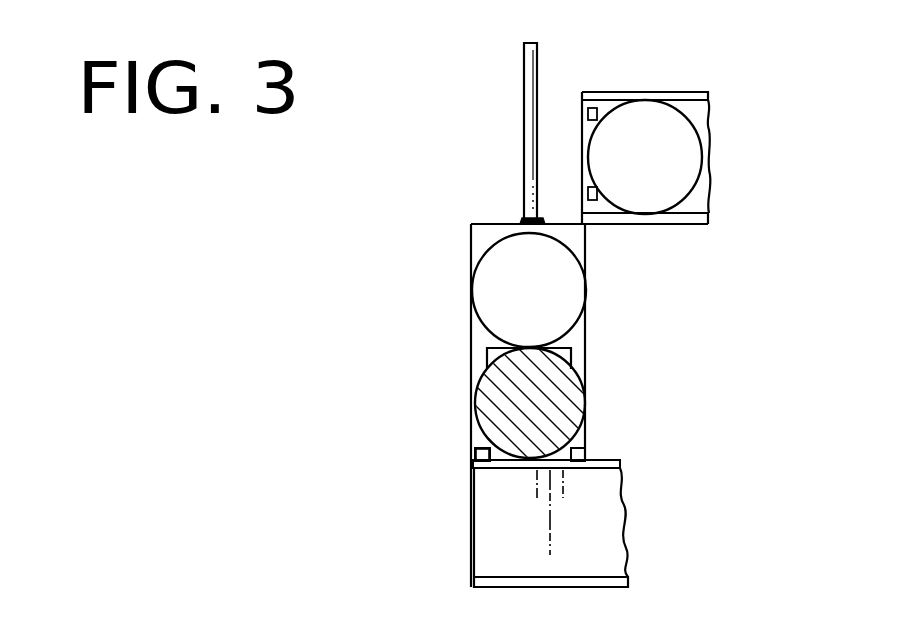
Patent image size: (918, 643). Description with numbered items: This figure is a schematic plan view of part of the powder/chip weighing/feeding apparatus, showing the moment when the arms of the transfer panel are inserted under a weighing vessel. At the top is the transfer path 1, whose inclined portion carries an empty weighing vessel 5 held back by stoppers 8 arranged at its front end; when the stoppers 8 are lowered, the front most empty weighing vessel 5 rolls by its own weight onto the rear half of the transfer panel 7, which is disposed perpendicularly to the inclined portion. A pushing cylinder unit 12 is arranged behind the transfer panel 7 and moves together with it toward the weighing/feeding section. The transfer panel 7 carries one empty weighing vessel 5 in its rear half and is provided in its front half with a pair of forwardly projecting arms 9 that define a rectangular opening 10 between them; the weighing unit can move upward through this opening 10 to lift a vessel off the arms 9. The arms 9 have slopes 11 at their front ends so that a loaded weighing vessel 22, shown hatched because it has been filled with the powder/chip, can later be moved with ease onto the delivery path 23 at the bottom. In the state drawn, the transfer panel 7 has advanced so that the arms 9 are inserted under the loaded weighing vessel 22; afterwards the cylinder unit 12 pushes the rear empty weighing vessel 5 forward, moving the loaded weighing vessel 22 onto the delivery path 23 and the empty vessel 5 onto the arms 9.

The transfer path 1 is at (715, 75).
The empty weighing vessel 5 is at (680, 148).
The transfer panel 7 is at (458, 276).
The stopper 8 is at (589, 108).
The arm 9 is at (582, 440).
The rectangular opening 10 is at (485, 358).
The slope 11 is at (482, 456).
The pushing cylinder unit 12 is at (528, 108).
The loaded weighing vessel 22 is at (562, 402).
The delivery path 23 is at (605, 523).